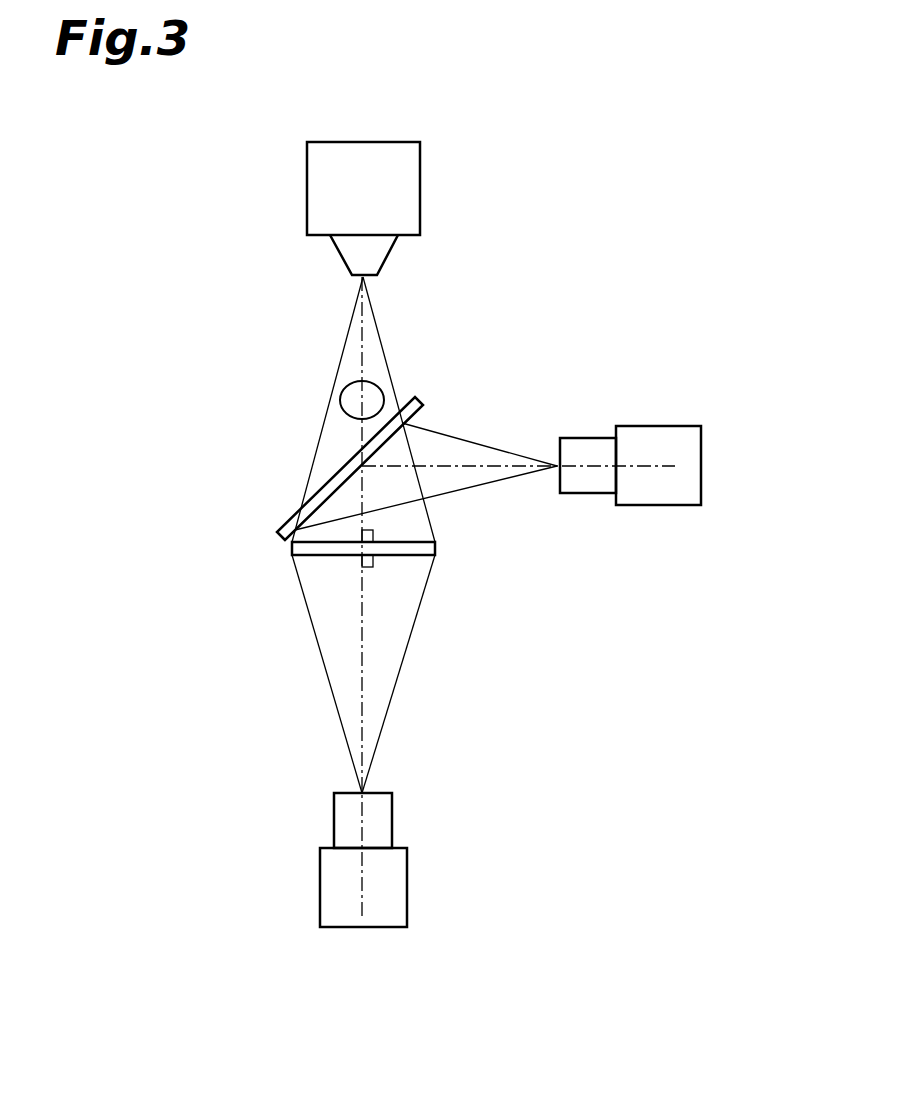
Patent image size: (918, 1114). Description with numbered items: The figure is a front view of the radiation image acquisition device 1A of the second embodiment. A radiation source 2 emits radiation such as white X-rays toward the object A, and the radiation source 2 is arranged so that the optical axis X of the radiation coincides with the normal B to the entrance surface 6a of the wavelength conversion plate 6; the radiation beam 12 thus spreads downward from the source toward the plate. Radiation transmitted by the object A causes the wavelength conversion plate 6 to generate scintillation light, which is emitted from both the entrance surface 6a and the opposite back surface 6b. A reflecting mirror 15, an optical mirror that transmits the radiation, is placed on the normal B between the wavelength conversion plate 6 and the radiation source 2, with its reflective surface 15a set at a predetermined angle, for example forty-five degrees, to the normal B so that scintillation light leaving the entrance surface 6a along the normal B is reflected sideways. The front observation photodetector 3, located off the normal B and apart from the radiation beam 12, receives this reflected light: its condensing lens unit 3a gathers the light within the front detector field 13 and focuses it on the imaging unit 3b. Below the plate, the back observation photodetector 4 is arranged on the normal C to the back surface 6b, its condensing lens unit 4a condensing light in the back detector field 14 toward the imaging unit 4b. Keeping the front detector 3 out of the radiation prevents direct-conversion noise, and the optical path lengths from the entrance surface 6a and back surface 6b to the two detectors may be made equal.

The radiation image acquisition device 1A is at (646, 198).
The radiation source 2 is at (363, 142).
The front observation photodetector 3 is at (673, 444).
The condensing lens unit 3a is at (586, 438).
The imaging unit 3b is at (660, 426).
The back observation photodetector 4 is at (320, 905).
The condensing lens unit 4a is at (334, 828).
The imaging unit 4b is at (320, 888).
The wavelength conversion plate 6 is at (440, 548).
The entrance surface 6a is at (410, 542).
The back surface 6b is at (400, 557).
The radiation beam 12 is at (333, 437).
The front detector field 13 is at (490, 455).
The back detector field 14 is at (387, 655).
The reflecting mirror 15 is at (276, 544).
The reflective surface 15a is at (421, 409).
The object A is at (350, 385).
The normal to the entrance surface B is at (363, 501).
The normal to the back surface C is at (355, 645).
The optical axis of the radiation X is at (365, 360).